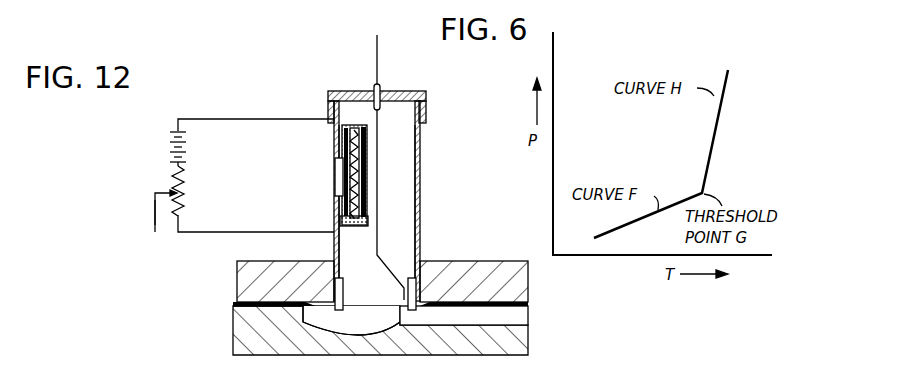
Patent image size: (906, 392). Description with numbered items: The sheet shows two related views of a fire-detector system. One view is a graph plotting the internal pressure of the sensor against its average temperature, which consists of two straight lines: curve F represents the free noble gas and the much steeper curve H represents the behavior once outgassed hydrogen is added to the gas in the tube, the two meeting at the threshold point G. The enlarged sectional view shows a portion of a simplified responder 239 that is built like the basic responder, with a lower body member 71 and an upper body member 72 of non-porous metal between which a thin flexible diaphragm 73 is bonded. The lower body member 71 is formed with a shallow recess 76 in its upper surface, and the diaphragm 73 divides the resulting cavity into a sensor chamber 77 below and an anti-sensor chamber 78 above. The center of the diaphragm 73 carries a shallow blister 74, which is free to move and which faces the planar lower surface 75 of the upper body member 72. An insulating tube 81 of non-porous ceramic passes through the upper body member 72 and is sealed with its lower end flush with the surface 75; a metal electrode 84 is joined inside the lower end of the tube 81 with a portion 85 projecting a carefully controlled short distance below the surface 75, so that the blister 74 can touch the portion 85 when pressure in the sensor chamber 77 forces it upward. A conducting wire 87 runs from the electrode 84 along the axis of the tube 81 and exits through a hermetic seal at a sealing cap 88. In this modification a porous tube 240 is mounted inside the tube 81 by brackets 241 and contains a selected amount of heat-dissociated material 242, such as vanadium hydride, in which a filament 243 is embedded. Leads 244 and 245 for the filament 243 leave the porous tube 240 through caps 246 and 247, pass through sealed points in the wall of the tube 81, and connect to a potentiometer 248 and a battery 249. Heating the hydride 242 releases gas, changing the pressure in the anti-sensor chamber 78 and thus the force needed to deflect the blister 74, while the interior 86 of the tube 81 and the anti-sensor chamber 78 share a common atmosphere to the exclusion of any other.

The lead 244 is at (257, 114).
The battery 249 is at (167, 146).
The potentiometer 248 is at (187, 196).
The lead 245 is at (154, 215).
The sealing cap 88 is at (436, 72).
The inside of the tube 86 is at (420, 186).
The tube 81 is at (420, 224).
The metal electrode 84 is at (421, 266).
The porous tube 240 is at (366, 174).
The bracket 241 is at (335, 188).
The filament 243 is at (365, 154).
The heat-dissociated material 242 is at (366, 204).
The cap 246 is at (365, 114).
The cap 247 is at (362, 228).
The conducting wire 87 is at (398, 268).
The upper body member 72 is at (525, 274).
The responder 239 is at (479, 258).
The diaphragm 73 is at (525, 304).
The lower body member 71 is at (246, 318).
The sensor chamber 77 is at (525, 319).
The blister 74 is at (401, 326).
The recess 76 is at (306, 322).
The lower surface 75 is at (431, 306).
The electrode portion 85 is at (375, 294).
The anti-sensor chamber 78 is at (392, 304).